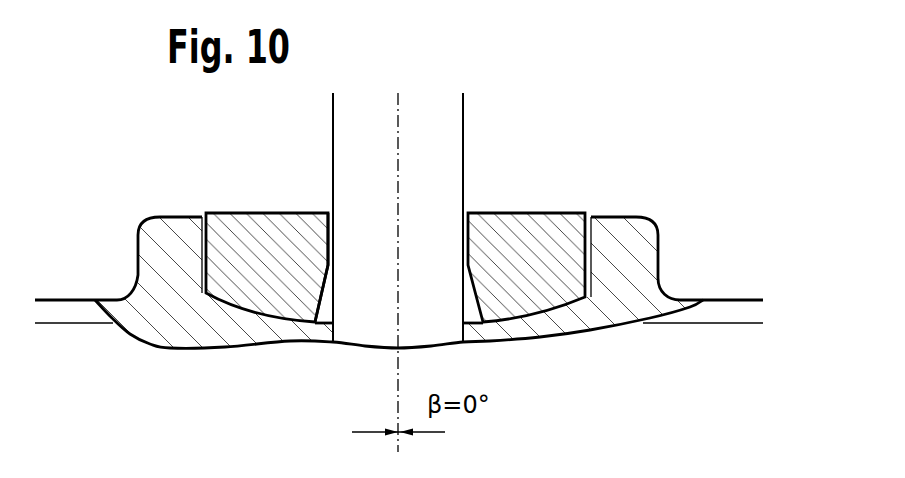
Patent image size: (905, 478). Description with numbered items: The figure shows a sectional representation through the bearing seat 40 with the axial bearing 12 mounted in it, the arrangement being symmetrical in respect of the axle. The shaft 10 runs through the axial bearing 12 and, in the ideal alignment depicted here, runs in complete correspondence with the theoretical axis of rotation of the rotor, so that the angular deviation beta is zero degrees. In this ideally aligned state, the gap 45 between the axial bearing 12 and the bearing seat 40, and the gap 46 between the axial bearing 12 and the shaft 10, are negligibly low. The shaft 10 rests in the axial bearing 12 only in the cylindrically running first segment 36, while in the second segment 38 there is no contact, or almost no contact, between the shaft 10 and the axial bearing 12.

The shaft 10 is at (452, 119).
The axial bearing 12 is at (533, 210).
The first segment 36 is at (462, 243).
The second segment 38 is at (336, 297).
The bearing seat 40 is at (632, 213).
The gap 45 is at (207, 214).
The gap 46 is at (328, 214).